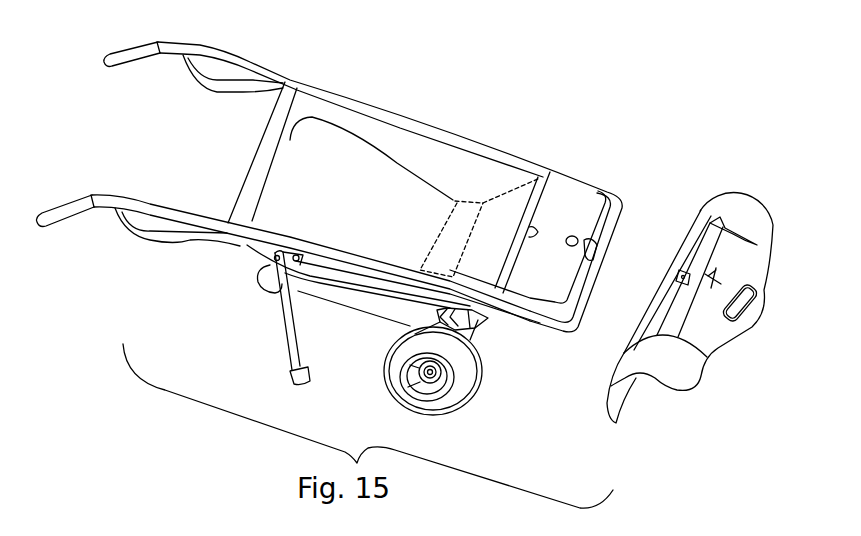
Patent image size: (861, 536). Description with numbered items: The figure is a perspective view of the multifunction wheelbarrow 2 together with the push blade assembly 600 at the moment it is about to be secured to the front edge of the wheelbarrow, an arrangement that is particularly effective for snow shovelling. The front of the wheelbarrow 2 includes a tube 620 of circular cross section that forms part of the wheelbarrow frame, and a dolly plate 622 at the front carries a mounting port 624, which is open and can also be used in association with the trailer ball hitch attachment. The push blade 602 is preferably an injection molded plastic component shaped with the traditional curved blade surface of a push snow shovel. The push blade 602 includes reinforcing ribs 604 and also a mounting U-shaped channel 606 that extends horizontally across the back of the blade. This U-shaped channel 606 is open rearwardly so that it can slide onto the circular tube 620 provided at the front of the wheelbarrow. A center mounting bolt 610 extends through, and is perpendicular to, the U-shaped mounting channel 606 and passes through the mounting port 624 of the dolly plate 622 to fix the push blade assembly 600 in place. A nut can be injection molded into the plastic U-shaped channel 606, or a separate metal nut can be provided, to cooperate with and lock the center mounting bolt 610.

The multifunction wheelbarrow 2 is at (448, 113).
The push blade assembly 600 is at (730, 387).
The push blade 602 is at (767, 224).
The reinforcing ribs 604 is at (710, 222).
The U-shaped channel 606 is at (745, 228).
The center mounting bolt 610 is at (721, 278).
The circular tube 620 is at (618, 196).
The dolly plate 622 is at (567, 188).
The mounting port 624 is at (577, 239).